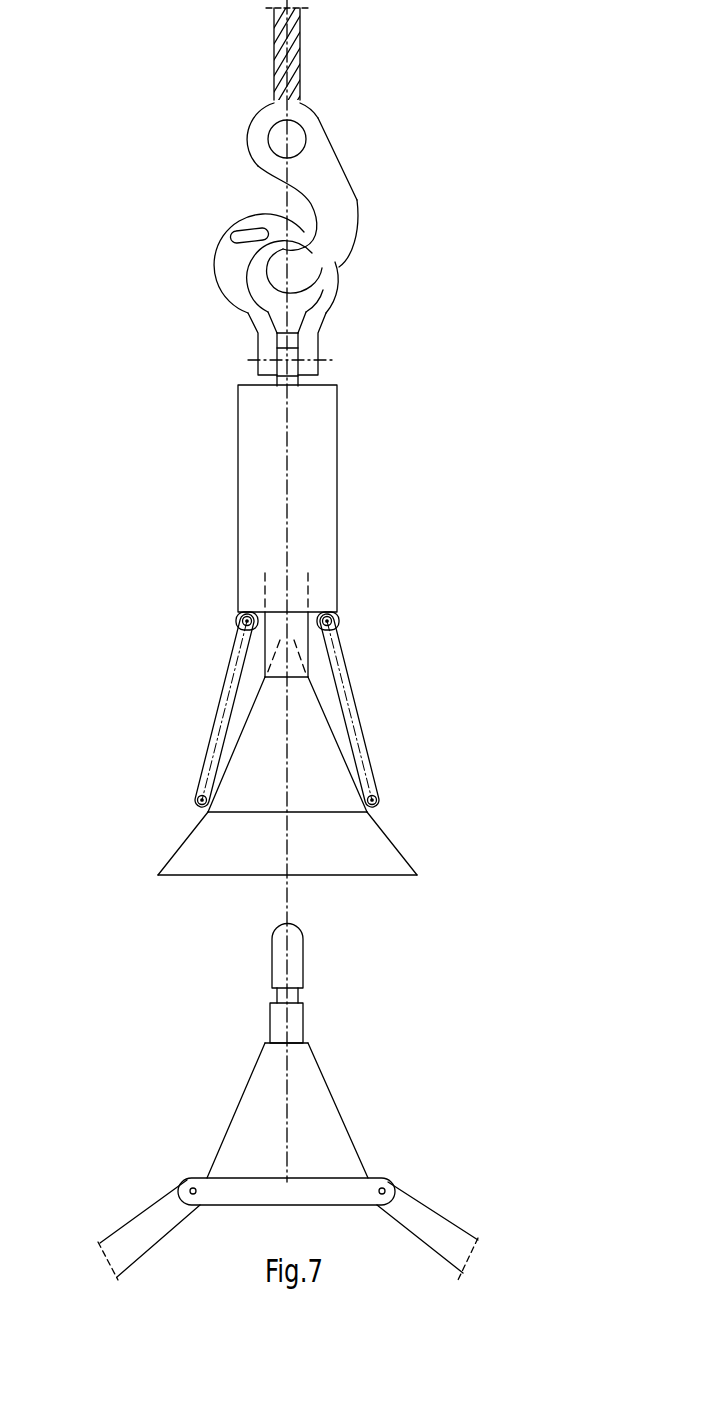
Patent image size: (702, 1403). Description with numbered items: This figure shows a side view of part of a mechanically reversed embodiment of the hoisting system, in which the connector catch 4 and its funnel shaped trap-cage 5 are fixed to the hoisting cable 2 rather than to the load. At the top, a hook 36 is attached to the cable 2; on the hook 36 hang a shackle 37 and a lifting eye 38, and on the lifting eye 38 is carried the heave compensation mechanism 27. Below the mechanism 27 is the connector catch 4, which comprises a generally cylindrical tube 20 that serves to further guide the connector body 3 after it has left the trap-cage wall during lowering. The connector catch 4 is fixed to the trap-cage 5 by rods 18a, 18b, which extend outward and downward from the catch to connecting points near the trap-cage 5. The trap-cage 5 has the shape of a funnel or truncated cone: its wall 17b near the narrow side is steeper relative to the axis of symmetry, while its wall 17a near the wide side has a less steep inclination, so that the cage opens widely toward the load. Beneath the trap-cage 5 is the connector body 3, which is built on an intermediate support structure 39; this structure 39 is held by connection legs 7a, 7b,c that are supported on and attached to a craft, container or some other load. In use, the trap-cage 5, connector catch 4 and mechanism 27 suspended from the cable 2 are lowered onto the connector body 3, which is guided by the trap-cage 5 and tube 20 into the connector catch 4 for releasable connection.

The hoisting cable 2 is at (292, 53).
The connector body 3 is at (297, 947).
The connector catch 4 is at (200, 204).
The trap-cage 5 is at (152, 891).
The leg 7a is at (150, 1215).
The legs 7b,c is at (433, 1222).
The trap-cage wall near the wide side 17a is at (183, 833).
The trap-cage wall near the narrow side 17b is at (315, 720).
The rod 18a is at (227, 683).
The rod 18b is at (342, 677).
The cylindrical tube 20 is at (297, 640).
The heave compensation mechanism 27 is at (354, 446).
The hook 36 is at (340, 195).
The shackle 37 is at (333, 278).
The lifting eye 38 is at (285, 376).
The intermediate support structure 39 is at (303, 1062).